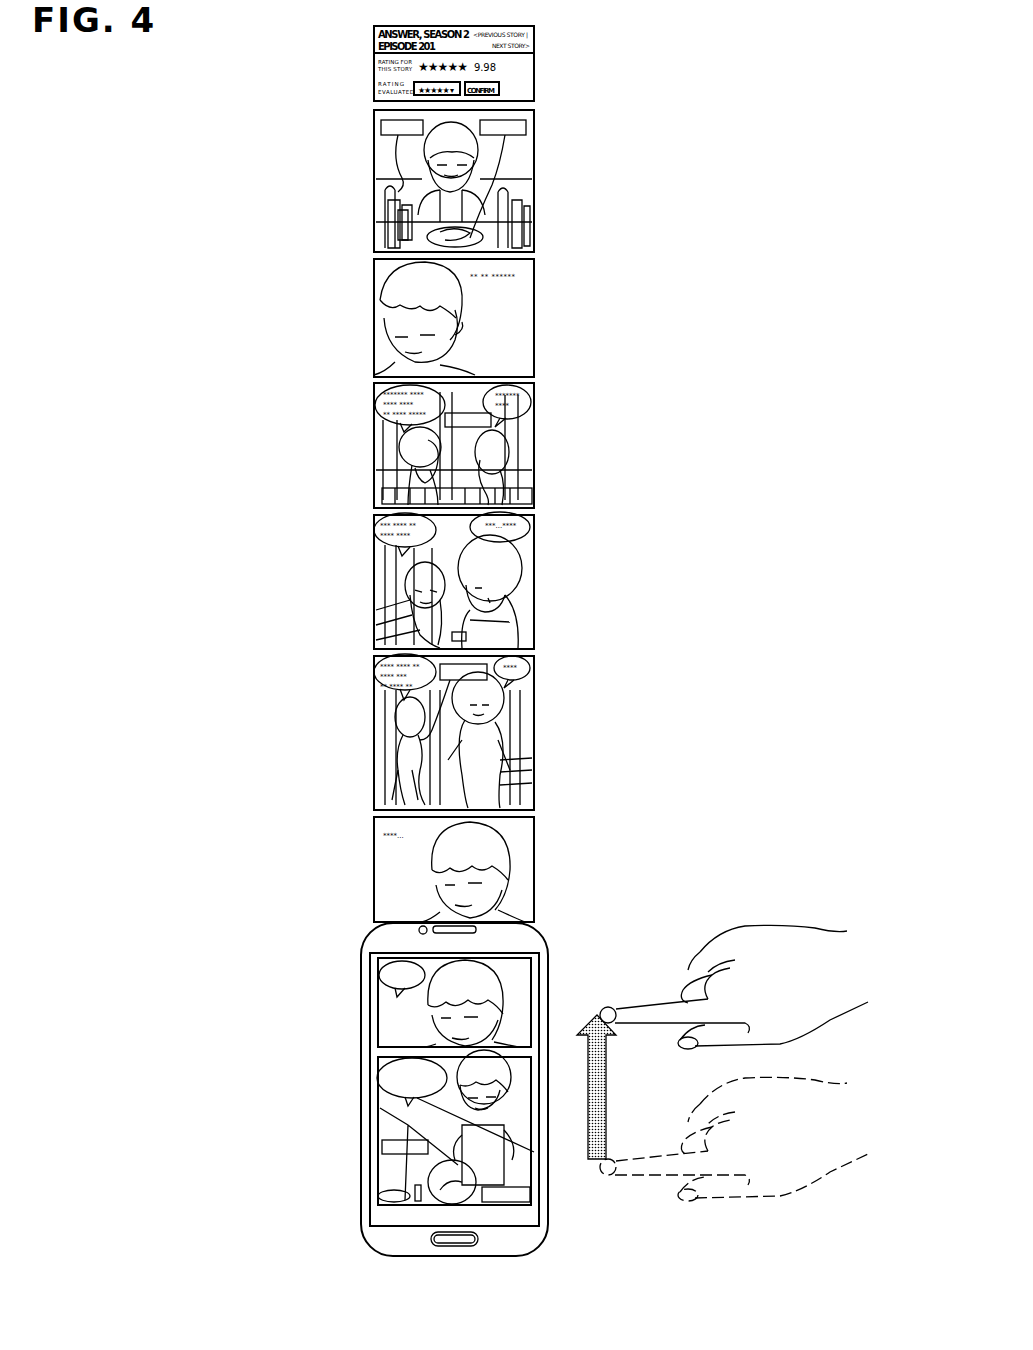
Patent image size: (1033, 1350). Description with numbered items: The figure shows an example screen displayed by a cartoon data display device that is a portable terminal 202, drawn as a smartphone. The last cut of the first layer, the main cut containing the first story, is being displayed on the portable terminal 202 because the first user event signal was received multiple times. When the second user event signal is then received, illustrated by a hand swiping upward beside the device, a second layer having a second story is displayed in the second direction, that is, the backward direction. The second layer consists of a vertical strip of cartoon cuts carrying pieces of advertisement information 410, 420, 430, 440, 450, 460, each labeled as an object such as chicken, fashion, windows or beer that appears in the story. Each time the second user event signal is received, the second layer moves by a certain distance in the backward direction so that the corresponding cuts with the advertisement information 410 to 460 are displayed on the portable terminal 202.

The portable terminal 202 is at (449, 1089).
The advertisement information 410 is at (382, 1146).
The advertisement information 420 is at (530, 1196).
The advertisement information 430 is at (478, 664).
The advertisement information 440 is at (491, 420).
The advertisement information 450 is at (526, 128).
The advertisement information 460 is at (381, 127).